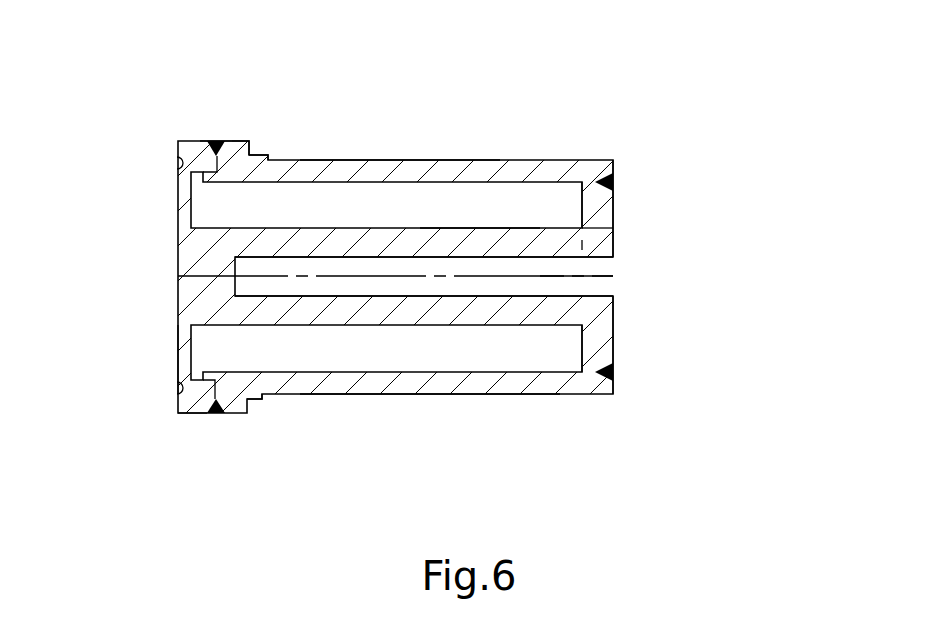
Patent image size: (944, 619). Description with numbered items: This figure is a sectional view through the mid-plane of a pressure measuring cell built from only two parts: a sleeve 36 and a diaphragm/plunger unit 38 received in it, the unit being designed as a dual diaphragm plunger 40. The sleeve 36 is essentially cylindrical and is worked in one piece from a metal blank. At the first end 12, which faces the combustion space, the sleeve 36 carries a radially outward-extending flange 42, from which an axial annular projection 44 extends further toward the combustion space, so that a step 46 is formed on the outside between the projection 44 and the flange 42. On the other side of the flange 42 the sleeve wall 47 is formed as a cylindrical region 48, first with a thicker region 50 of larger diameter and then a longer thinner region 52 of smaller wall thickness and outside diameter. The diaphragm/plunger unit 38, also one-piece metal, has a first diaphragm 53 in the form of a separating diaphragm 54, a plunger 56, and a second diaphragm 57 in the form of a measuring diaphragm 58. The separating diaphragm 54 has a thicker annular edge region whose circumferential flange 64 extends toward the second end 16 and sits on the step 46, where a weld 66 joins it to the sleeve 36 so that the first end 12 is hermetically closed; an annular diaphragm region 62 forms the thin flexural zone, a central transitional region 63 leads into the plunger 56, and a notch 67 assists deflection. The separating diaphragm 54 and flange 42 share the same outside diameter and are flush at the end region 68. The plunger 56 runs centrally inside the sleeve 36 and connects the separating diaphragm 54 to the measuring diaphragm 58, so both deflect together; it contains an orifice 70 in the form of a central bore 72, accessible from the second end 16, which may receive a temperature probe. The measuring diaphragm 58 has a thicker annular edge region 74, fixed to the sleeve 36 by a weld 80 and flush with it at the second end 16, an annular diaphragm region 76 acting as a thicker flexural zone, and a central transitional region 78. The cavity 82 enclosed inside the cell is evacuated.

The first end 12 is at (160, 220).
The second end 16 is at (632, 183).
The sleeve 36 is at (343, 176).
The diaphragm/plunger unit 38 is at (458, 226).
The dual diaphragm plunger 40 is at (496, 226).
The flange 42 is at (230, 155).
The axial annular projection 44 is at (195, 176).
The step 46 is at (213, 140).
The sleeve wall 47 is at (447, 170).
The cylindrical region 48 is at (440, 396).
The thicker region 50 is at (260, 400).
The thinner region 52 is at (347, 395).
The first diaphragm 53 is at (175, 352).
The separating diaphragm 54 is at (175, 370).
The plunger 56 is at (520, 446).
The second diaphragm 57 is at (615, 345).
The measuring diaphragm 58 is at (613, 233).
The annular diaphragm region 62 is at (189, 413).
The central transitional region 63 is at (177, 277).
The circumferential flange 64 is at (200, 413).
The weld 66 is at (222, 140).
The notch 67 is at (175, 392).
The end region 68 is at (256, 147).
The orifice 70 is at (557, 277).
The central bore 72 is at (503, 278).
The annular edge region 74 is at (583, 366).
The annular diaphragm region 76 is at (593, 218).
The central transitional region 78 is at (588, 247).
The weld 80 is at (615, 375).
The cavity 82 is at (386, 200).